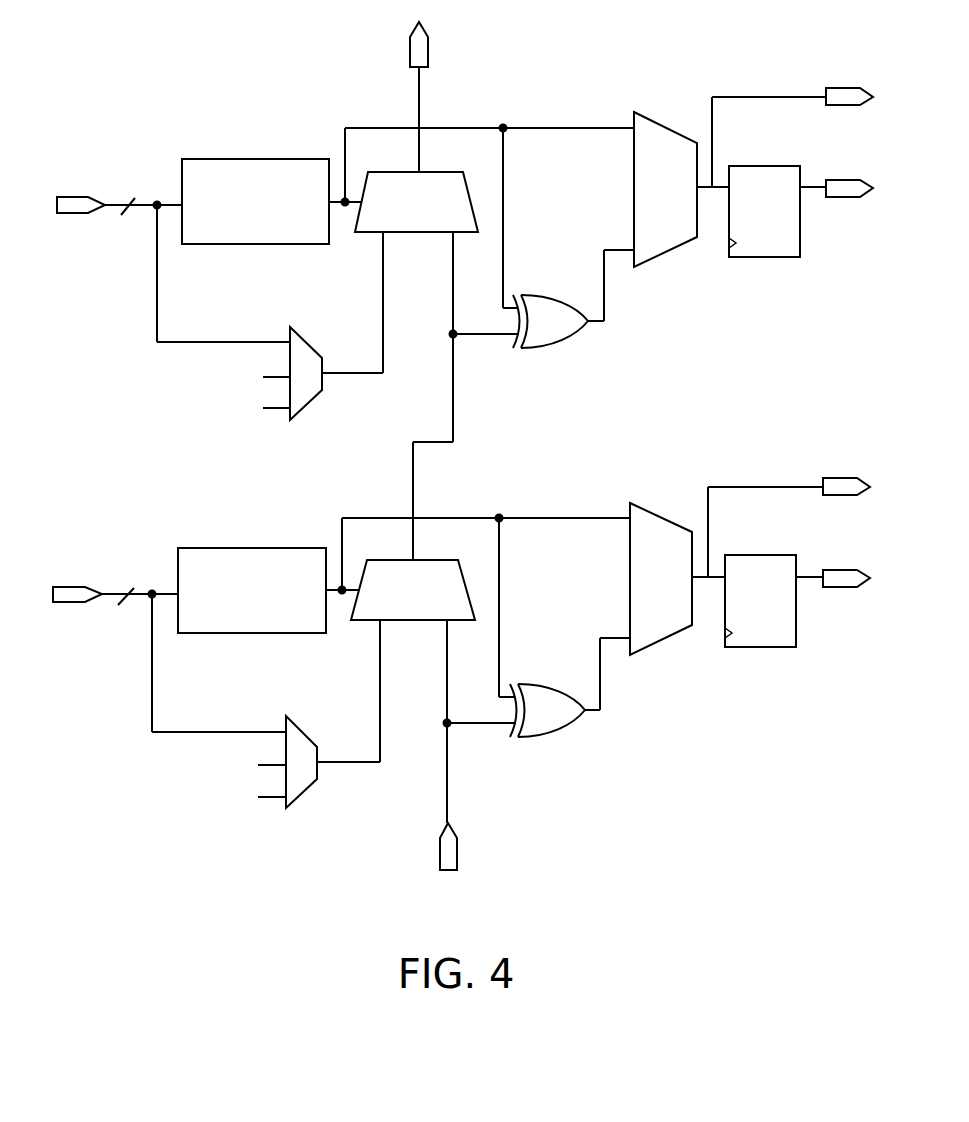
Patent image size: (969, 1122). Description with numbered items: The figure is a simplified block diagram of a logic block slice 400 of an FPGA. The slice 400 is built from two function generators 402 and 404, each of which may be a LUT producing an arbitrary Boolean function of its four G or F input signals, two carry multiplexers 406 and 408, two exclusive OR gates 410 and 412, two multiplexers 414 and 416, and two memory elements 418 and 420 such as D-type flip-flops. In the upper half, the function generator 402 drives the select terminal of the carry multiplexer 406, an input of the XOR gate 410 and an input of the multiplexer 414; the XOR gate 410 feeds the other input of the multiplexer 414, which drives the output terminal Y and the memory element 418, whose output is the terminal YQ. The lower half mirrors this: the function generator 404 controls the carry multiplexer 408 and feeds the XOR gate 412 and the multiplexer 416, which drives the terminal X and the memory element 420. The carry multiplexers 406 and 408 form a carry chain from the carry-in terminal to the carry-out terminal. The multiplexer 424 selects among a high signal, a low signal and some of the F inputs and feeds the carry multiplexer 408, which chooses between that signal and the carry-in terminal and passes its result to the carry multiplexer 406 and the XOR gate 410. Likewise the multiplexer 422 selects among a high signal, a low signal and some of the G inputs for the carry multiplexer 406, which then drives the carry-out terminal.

The logic block slice 400 is at (687, 860).
The function generator 402 is at (228, 159).
The function generator 404 is at (223, 548).
The carry multiplexer 406 is at (470, 196).
The carry multiplexer 408 is at (467, 584).
The XOR gate 410 is at (533, 348).
The XOR gate 412 is at (530, 737).
The multiplexer 414 is at (668, 248).
The multiplexer 416 is at (665, 638).
The memory element 418 is at (755, 258).
The memory element 420 is at (752, 648).
The multiplexer 422 is at (312, 395).
The multiplexer 424 is at (308, 785).